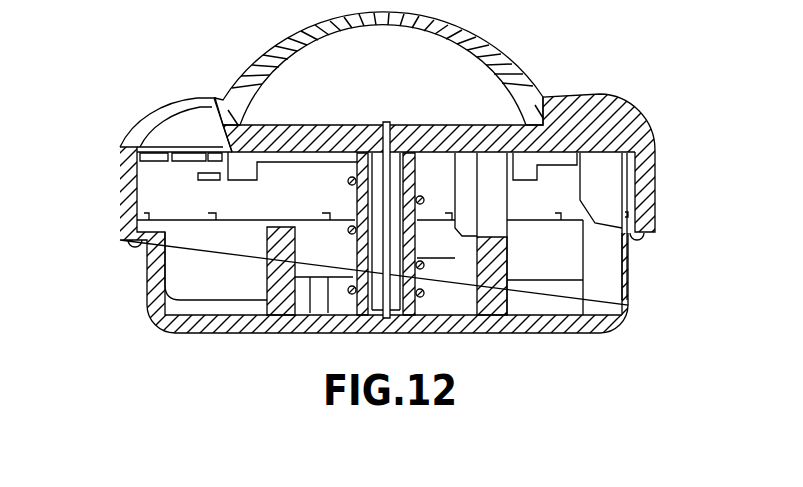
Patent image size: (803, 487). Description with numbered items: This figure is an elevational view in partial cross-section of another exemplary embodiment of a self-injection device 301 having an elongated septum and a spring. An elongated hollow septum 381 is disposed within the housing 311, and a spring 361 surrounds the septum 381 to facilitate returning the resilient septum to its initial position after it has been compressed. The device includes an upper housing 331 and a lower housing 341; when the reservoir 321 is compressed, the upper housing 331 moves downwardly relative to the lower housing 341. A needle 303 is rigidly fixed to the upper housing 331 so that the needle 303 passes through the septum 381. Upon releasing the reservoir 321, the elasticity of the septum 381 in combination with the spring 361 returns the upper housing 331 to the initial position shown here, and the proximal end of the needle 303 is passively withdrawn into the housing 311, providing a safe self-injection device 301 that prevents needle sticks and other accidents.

The self-injection device 301 is at (127, 348).
The needle 303 is at (365, 192).
The housing 311 is at (643, 107).
The reservoir 321 is at (514, 54).
The upper housing 331 is at (662, 168).
The lower housing 341 is at (630, 262).
The spring 361 is at (437, 294).
The elongated hollow septum 381 is at (349, 250).